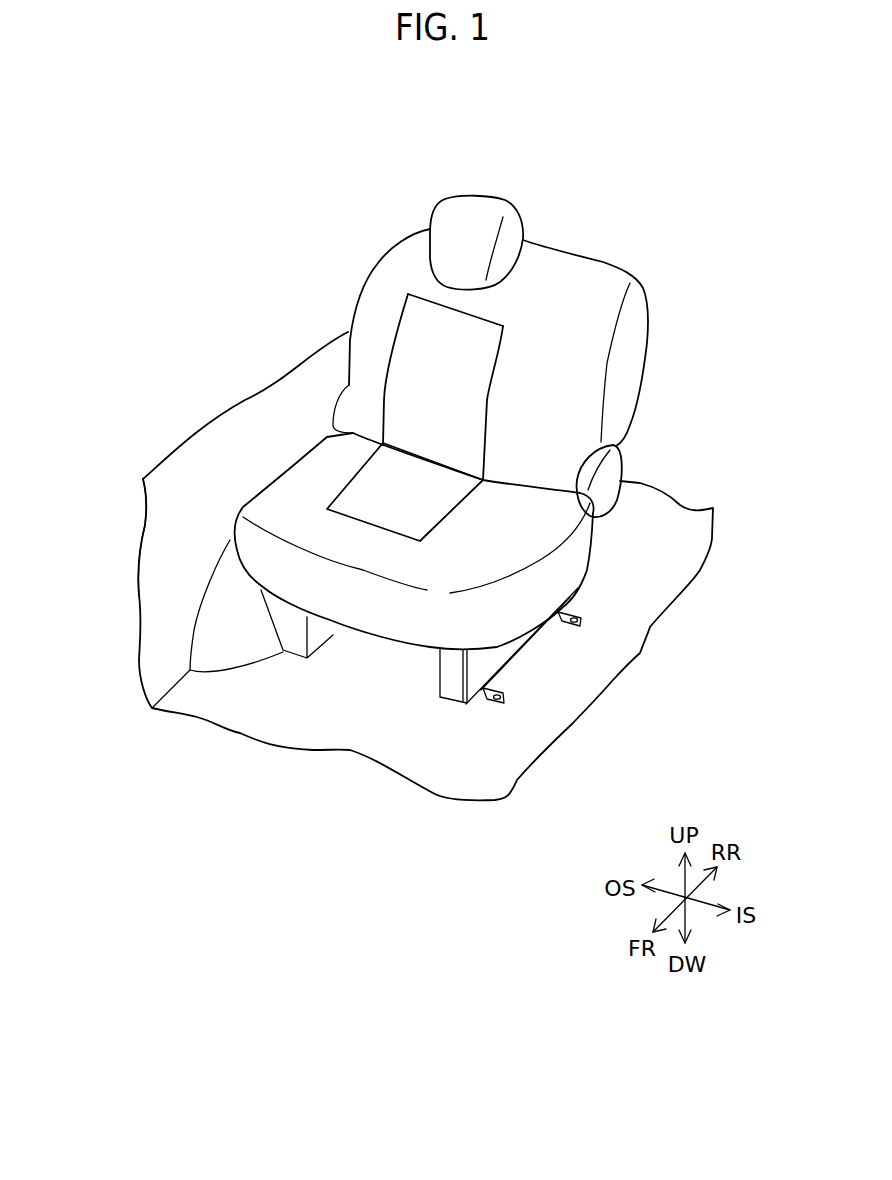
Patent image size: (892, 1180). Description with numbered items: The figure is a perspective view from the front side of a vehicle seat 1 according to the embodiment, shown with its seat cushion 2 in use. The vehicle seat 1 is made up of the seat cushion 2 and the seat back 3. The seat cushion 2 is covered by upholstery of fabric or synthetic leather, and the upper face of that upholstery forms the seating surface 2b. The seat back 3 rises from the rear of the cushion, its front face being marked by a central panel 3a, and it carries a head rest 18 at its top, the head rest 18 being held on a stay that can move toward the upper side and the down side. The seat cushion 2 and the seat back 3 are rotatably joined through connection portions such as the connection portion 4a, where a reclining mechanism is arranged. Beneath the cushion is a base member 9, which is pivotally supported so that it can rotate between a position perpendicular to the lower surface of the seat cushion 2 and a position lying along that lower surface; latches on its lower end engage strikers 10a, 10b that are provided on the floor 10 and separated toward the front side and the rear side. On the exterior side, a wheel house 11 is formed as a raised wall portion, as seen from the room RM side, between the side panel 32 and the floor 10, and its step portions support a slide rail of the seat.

The vehicle seat 1 is at (503, 493).
The seat cushion 2 is at (483, 498).
The seating surface 2b is at (367, 493).
The seat back 3 is at (543, 306).
The seat back center panel 3a is at (407, 333).
The connection portion 4a is at (620, 462).
The base member 9 is at (453, 688).
The floor 10 is at (603, 682).
The striker 10a is at (502, 697).
The striker 10b is at (583, 620).
The wheel house 11 is at (210, 620).
The head rest 18 is at (477, 208).
The side panel 32 is at (142, 562).
The room RM is at (722, 215).